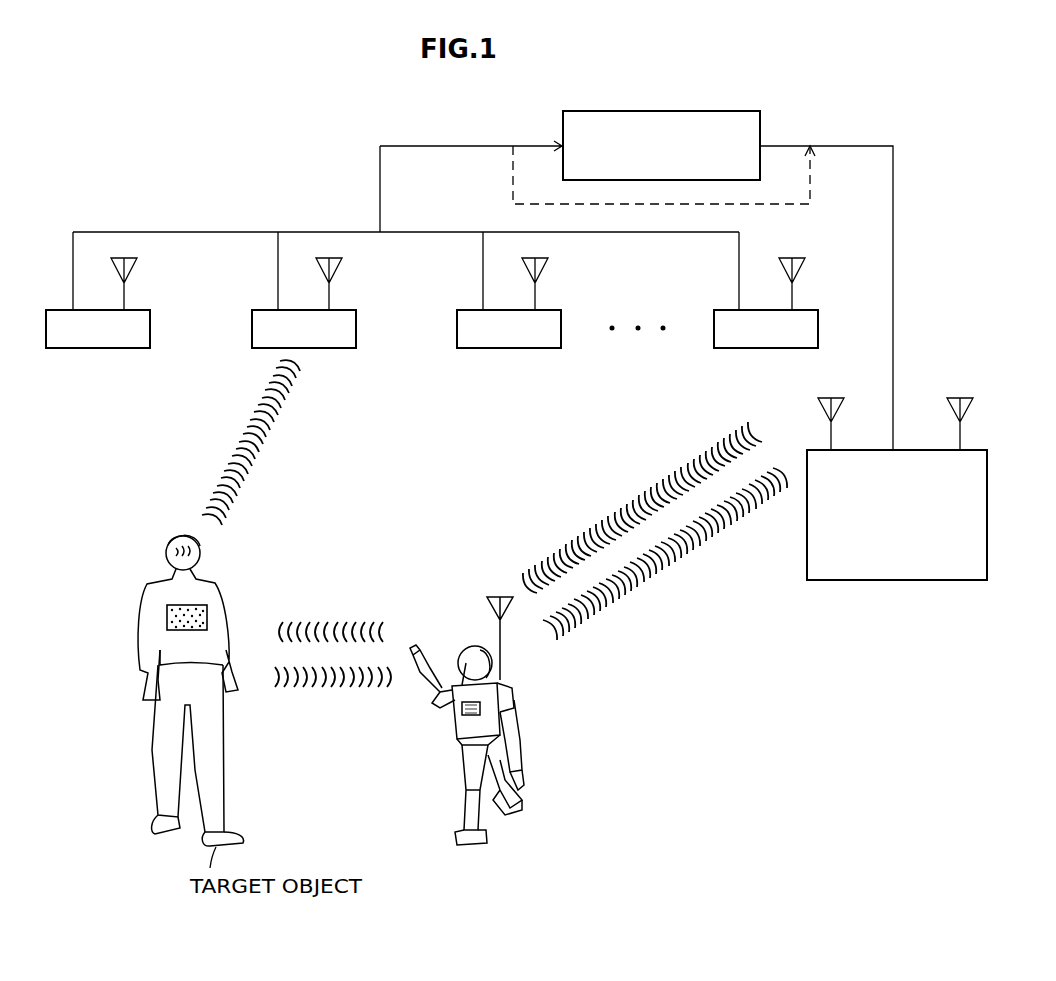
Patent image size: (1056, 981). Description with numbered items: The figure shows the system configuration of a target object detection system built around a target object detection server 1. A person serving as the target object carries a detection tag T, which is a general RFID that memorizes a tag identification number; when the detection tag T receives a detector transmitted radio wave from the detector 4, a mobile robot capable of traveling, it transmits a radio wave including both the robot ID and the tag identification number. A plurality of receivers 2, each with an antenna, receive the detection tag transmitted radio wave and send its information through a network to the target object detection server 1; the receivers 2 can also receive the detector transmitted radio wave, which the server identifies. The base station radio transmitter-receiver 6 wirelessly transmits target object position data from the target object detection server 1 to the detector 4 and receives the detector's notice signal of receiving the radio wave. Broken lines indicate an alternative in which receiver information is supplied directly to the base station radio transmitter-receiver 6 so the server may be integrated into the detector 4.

The target object detection server 1 is at (724, 111).
The receiver 2 is at (720, 310).
The detector 4 is at (495, 817).
The base station radio transmitter-receiver 6 is at (987, 472).
The detection tag T is at (195, 605).